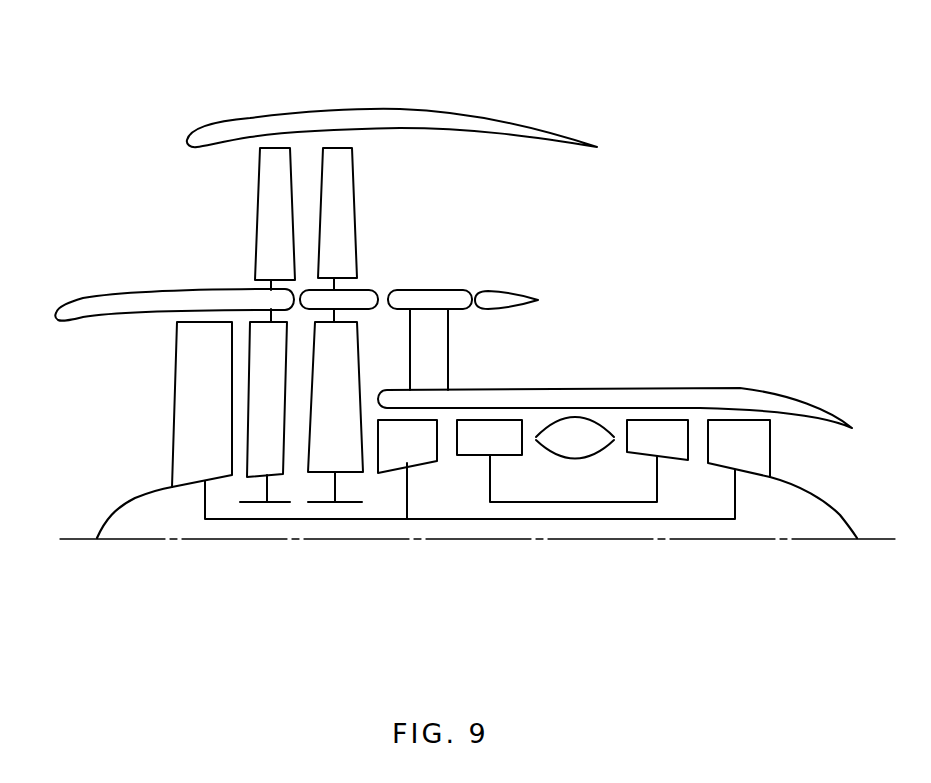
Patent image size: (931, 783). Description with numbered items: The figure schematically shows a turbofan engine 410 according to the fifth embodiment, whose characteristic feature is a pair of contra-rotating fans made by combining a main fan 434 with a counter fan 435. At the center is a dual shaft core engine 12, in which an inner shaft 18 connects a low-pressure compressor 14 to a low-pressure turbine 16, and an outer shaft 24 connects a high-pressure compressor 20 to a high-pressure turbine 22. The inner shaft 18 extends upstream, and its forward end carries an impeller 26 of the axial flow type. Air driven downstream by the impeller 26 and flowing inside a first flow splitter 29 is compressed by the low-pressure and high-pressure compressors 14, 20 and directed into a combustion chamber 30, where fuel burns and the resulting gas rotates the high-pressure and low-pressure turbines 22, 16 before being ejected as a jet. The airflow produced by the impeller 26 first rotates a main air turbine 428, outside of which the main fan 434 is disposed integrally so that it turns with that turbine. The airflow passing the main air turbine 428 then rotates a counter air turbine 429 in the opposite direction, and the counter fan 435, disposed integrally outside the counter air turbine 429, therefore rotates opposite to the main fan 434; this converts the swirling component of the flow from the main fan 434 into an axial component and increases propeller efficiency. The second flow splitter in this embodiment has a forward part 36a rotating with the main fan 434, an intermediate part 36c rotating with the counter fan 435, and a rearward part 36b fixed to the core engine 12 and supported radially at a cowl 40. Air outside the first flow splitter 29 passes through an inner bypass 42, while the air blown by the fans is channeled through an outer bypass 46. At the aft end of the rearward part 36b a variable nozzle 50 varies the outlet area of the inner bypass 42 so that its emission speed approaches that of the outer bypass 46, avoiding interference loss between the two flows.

The turbofan engine 410 is at (670, 209).
The core engine 12 is at (755, 381).
The low-pressure compressor 14 is at (415, 463).
The low-pressure turbine 16 is at (763, 452).
The inner shaft 18 is at (633, 519).
The high-pressure compressor 20 is at (505, 455).
The high-pressure turbine 22 is at (667, 452).
The outer shaft 24 is at (540, 502).
The impeller 26 is at (178, 380).
The first flow splitter 29 is at (598, 391).
The combustion chamber 30 is at (600, 457).
The forward part of second flow splitter 36a is at (157, 290).
The rearward part of second flow splitter 36b is at (433, 292).
The intermediate part of second flow splitter 36c is at (362, 292).
The cowl 40 is at (350, 118).
The inner bypass 42 is at (508, 352).
The outer bypass 46 is at (535, 198).
The variable nozzle 50 is at (505, 292).
The main air turbine 428 is at (280, 457).
The counter air turbine 429 is at (348, 372).
The main fan 434 is at (260, 200).
The counter fan 435 is at (343, 205).